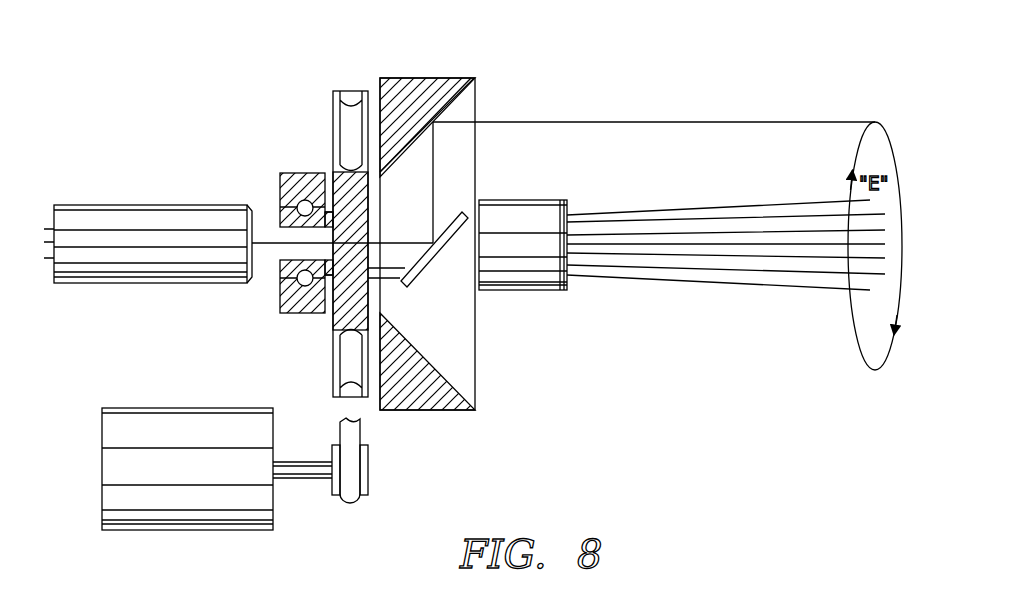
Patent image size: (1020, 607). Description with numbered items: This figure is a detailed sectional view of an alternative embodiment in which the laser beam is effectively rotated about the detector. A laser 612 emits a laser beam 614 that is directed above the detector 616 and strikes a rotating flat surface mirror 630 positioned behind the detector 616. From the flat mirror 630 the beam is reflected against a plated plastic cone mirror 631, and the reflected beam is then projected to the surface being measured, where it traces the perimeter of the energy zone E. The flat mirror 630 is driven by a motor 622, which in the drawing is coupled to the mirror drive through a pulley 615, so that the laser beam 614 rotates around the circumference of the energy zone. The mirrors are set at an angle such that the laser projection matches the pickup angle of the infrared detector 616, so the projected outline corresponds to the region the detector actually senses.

The laser 612 is at (127, 220).
The laser beam 614 is at (270, 228).
The drive pulley 615 is at (353, 430).
The detector 616 is at (525, 212).
The motor 622 is at (187, 425).
The flat surface mirror 630 is at (437, 274).
The plated plastic cone mirror 631 is at (470, 96).